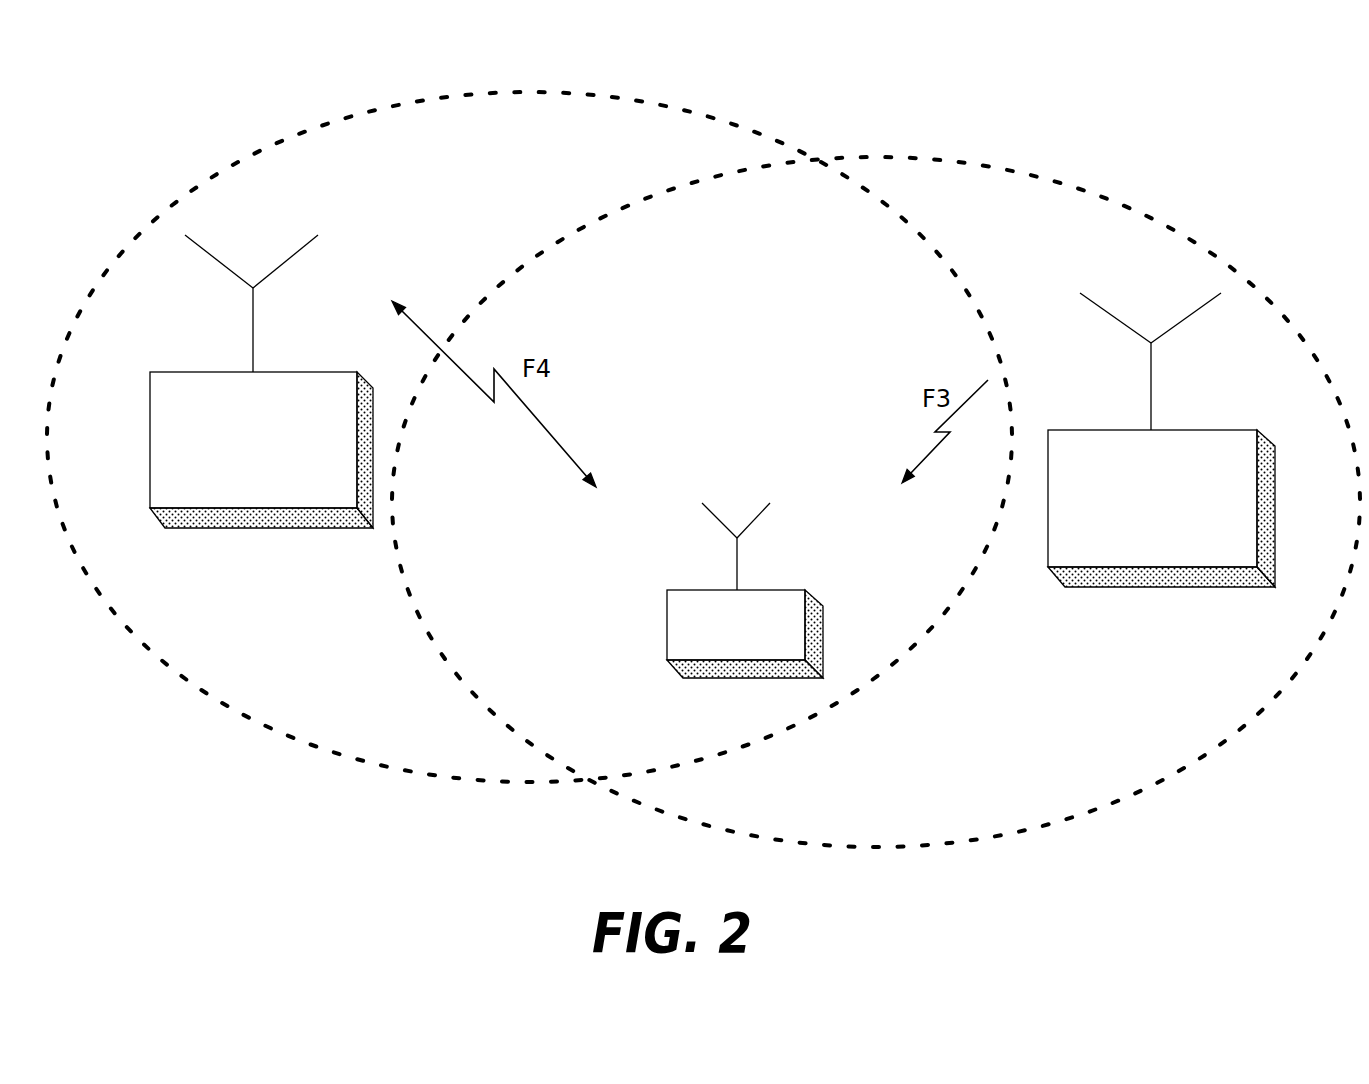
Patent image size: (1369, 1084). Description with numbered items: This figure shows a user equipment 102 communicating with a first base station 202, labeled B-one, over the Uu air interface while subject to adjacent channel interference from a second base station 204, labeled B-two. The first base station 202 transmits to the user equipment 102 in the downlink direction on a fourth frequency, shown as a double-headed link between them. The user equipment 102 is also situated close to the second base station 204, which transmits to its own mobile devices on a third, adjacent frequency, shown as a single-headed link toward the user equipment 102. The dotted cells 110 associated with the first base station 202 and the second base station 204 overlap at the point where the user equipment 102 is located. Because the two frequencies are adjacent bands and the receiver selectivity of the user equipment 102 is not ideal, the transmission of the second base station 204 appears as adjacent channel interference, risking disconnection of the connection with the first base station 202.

The cells 110 is at (593, 95).
The first base station 202 is at (150, 440).
The second base station 204 is at (1047, 520).
The user equipment 102 is at (667, 607).